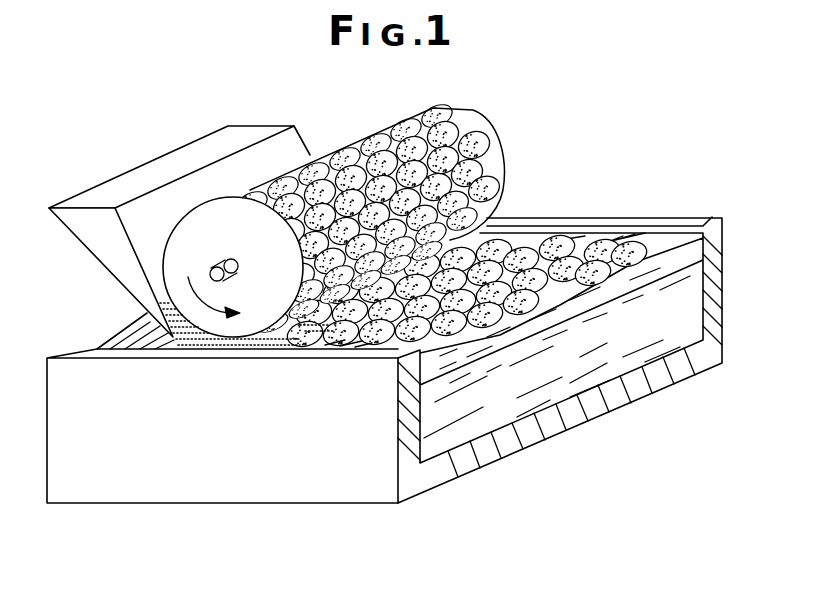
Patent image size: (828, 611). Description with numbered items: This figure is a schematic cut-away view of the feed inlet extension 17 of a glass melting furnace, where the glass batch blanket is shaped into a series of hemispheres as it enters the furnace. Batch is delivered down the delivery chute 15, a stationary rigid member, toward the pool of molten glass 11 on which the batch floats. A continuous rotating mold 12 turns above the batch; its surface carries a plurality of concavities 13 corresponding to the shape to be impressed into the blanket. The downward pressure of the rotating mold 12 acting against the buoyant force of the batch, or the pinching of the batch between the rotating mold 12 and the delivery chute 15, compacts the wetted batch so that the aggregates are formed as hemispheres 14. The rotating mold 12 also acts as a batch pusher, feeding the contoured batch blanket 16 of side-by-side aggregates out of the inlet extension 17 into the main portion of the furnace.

The molten glass 11 is at (545, 400).
The continuous rotating mold 12 is at (498, 160).
The concavities 13 is at (433, 150).
The hemispheres 14 is at (582, 248).
The delivery chute 15 is at (88, 255).
The contoured batch blanket 16 is at (550, 310).
The inlet extension 17 is at (147, 503).